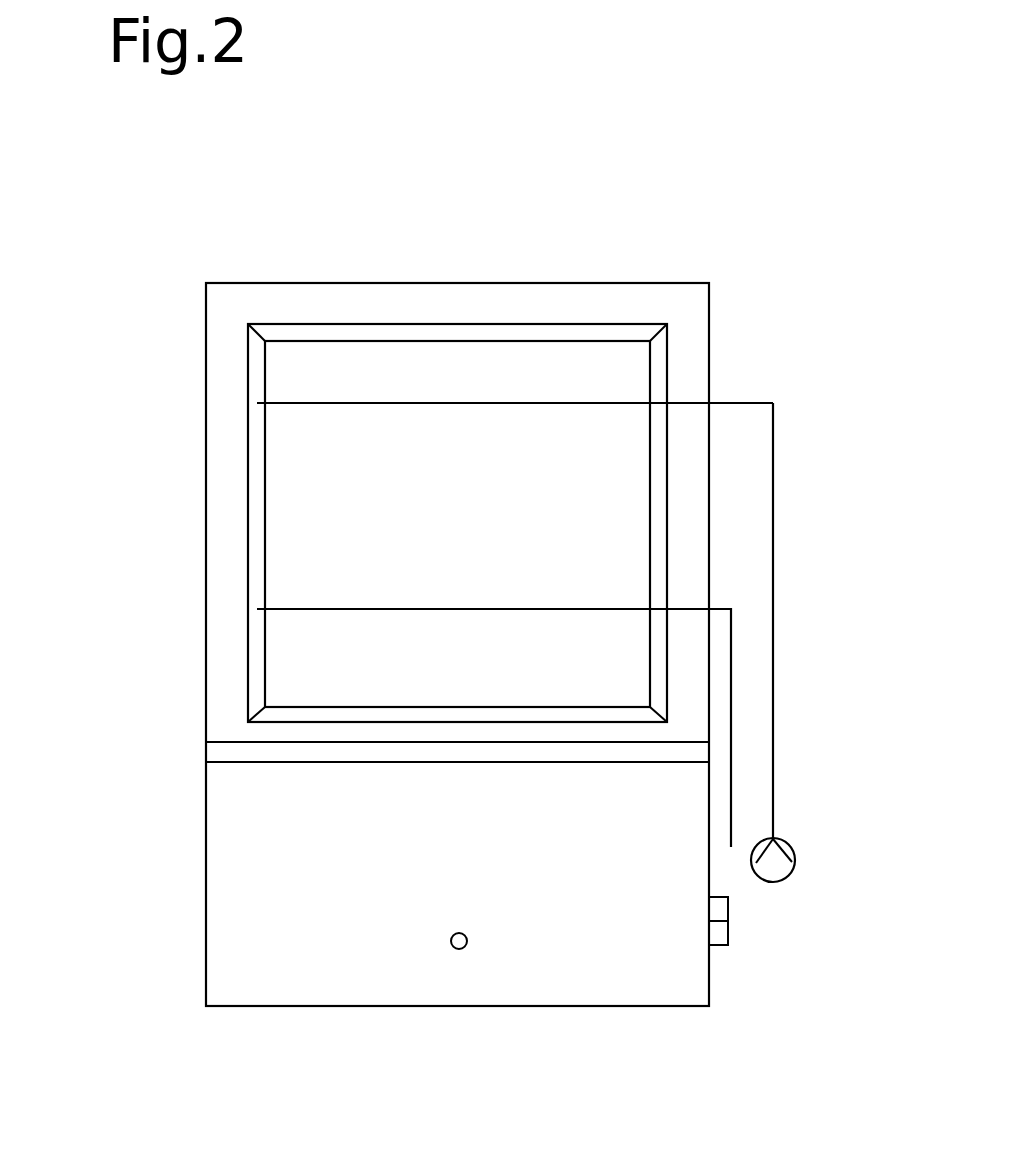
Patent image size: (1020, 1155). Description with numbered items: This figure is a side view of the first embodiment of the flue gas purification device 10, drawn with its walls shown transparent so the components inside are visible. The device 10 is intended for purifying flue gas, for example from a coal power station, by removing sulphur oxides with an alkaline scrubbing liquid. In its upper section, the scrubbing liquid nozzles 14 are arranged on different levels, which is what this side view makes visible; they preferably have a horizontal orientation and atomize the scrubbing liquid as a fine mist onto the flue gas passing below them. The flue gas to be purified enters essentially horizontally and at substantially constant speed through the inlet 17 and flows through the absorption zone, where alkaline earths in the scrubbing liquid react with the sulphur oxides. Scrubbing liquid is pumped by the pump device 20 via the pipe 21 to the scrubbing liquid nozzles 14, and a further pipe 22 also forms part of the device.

The flue gas purification device 10 is at (549, 266).
The scrubbing liquid nozzles 14 is at (523, 607).
The inlet 17 is at (258, 372).
The pump device 20 is at (781, 853).
The pipe 21 is at (774, 732).
The pipe 22 is at (461, 949).